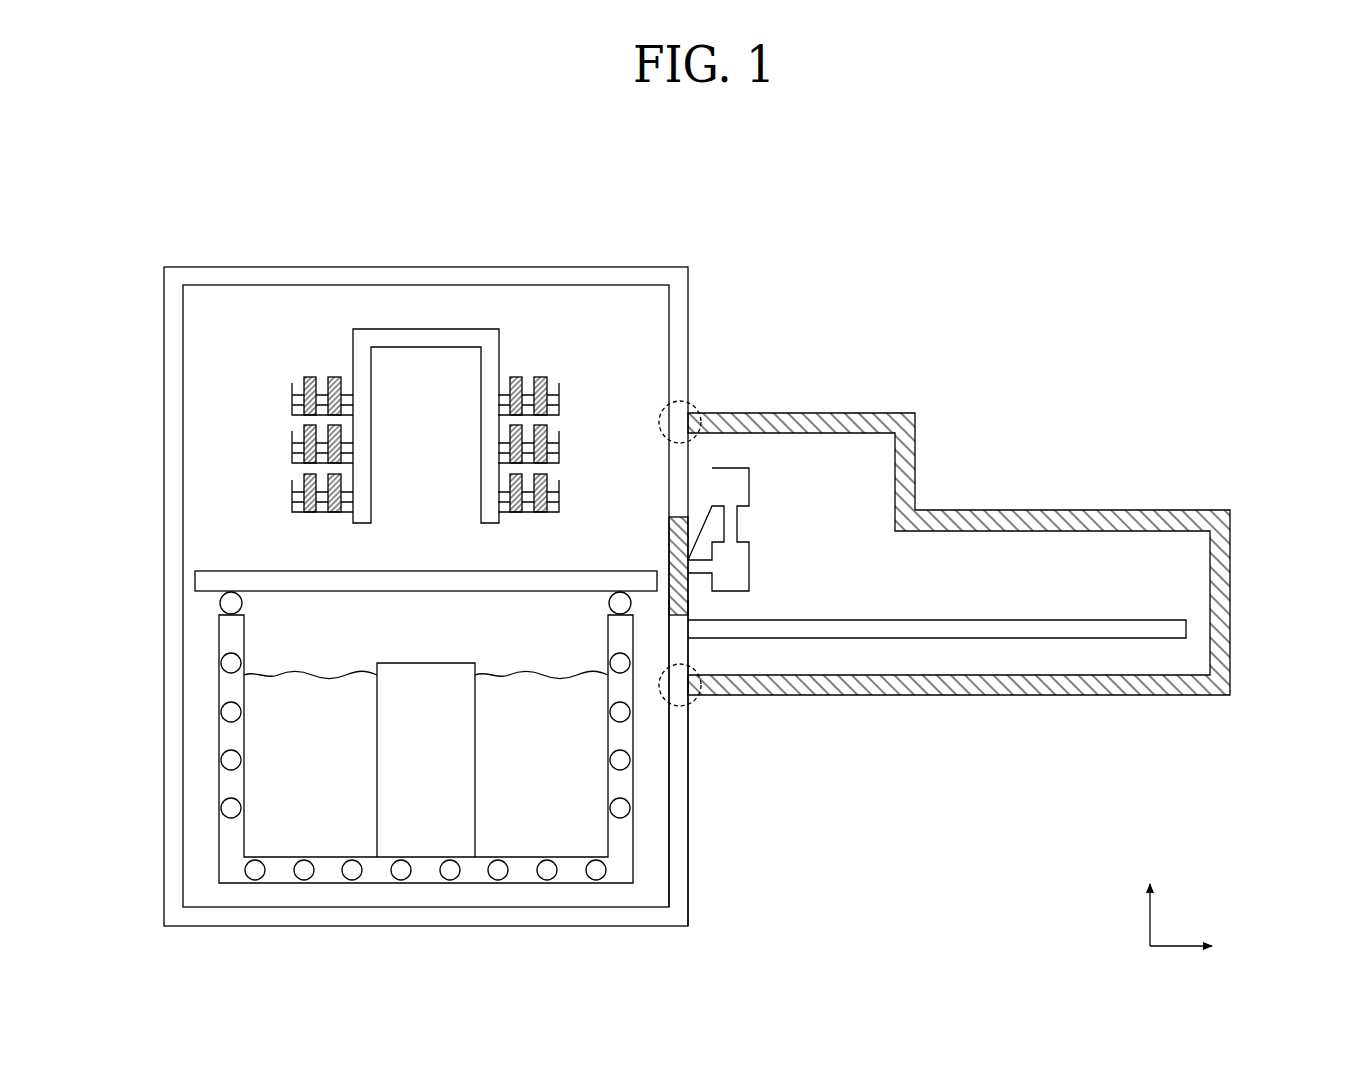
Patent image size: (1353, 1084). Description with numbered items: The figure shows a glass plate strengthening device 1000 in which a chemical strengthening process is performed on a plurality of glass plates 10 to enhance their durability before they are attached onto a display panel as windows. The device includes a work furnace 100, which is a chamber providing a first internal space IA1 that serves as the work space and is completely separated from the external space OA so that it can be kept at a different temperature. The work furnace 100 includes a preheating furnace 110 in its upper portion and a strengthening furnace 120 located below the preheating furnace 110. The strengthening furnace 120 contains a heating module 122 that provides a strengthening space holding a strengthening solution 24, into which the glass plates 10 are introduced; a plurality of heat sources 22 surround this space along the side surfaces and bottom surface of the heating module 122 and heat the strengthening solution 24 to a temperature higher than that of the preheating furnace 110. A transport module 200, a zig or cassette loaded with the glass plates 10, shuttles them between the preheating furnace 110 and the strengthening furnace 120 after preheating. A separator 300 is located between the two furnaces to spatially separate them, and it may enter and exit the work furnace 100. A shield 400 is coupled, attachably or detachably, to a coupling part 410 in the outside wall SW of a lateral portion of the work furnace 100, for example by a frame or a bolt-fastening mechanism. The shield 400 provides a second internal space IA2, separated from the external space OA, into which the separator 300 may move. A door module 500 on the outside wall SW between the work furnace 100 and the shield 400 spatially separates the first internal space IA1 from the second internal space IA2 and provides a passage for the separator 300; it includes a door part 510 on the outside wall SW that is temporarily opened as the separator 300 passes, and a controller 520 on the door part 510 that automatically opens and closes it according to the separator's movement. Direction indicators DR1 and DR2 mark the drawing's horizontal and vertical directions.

The glass plate strengthening device 1000 is at (701, 540).
The work furnace 100 is at (437, 561).
The preheating furnace 110 is at (195, 457).
The strengthening furnace 120 is at (469, 737).
The heating module 122 is at (531, 736).
The heat sources 22 is at (623, 762).
The strengthening solution 24 is at (594, 782).
The glass plates 10 is at (548, 380).
The transport module 200 is at (437, 340).
The separator 300 is at (195, 580).
The shield 400 is at (1068, 510).
The coupling part 410 is at (659, 422).
The door module 500 is at (738, 449).
The door part 510 is at (676, 517).
The controller 520 is at (732, 477).
The outside wall SW is at (690, 850).
The first internal space IA1 is at (212, 364).
The second internal space IA2 is at (1185, 575).
The external space OA is at (1185, 415).
The first direction DR1 is at (1205, 947).
The second direction DR2 is at (1150, 901).